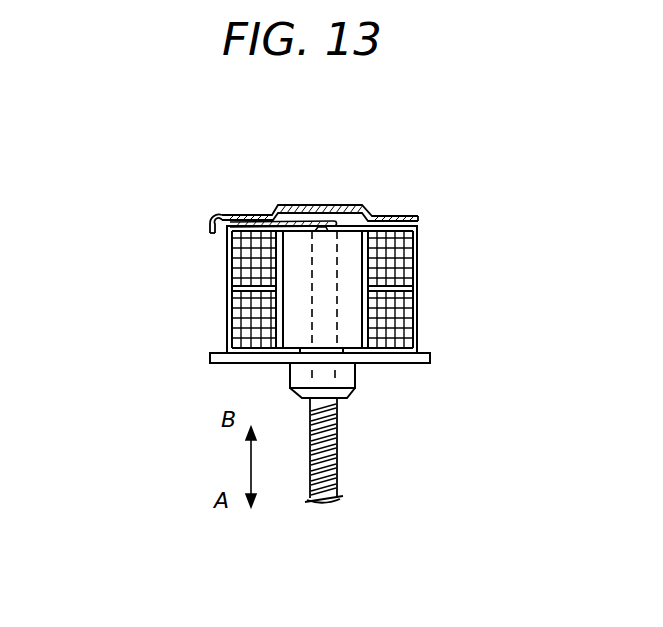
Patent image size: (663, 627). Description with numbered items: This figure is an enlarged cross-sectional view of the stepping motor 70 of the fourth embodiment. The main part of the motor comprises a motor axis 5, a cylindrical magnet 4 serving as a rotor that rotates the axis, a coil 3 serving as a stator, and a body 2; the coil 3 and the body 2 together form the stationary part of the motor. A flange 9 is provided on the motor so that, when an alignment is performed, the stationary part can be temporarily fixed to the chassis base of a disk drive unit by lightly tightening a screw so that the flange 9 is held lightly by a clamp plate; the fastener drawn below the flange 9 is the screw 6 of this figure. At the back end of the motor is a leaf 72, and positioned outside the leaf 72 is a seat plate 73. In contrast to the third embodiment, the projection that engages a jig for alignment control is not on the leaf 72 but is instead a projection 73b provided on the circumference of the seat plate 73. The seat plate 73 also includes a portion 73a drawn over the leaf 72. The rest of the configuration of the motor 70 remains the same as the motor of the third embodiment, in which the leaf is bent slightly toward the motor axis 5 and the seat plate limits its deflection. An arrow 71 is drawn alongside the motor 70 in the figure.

The body 2 is at (227, 300).
The coil 3 is at (394, 248).
The cylindrical magnet 4 is at (350, 325).
The motor axis 5 is at (327, 287).
The screw 6 is at (337, 480).
The flange 9 is at (407, 363).
The stepping motor 70 is at (147, 142).
The mounting direction arrow 71 is at (198, 336).
The leaf 72 is at (243, 240).
The seat plate 73 is at (247, 215).
The tongue of cover plate 73a is at (318, 207).
The projection 73b is at (212, 214).